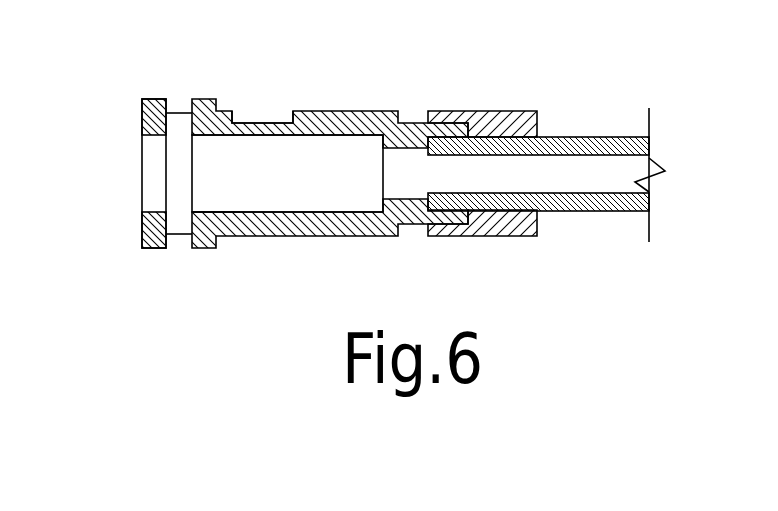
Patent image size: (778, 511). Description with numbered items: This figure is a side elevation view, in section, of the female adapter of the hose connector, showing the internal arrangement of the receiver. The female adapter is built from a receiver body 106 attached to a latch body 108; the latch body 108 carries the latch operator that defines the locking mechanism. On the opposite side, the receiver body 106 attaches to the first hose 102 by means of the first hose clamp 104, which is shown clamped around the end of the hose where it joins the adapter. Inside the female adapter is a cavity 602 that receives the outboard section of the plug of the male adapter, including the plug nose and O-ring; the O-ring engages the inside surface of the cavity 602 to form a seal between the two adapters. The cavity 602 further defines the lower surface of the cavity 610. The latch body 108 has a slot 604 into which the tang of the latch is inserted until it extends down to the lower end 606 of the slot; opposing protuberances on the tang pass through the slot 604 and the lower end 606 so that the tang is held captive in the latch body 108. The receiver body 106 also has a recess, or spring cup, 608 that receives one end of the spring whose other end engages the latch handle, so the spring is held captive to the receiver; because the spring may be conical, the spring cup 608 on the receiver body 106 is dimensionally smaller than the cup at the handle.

The first hose 102 is at (589, 137).
The first hose clamp 104 is at (495, 111).
The receiver body 106 is at (263, 237).
The latch body 108 is at (142, 125).
The cavity 602 is at (288, 183).
The slot 604 is at (183, 113).
The lower end of the slot 606 is at (178, 234).
The spring cup 608 is at (273, 123).
The lower surface of the cavity 610 is at (218, 212).